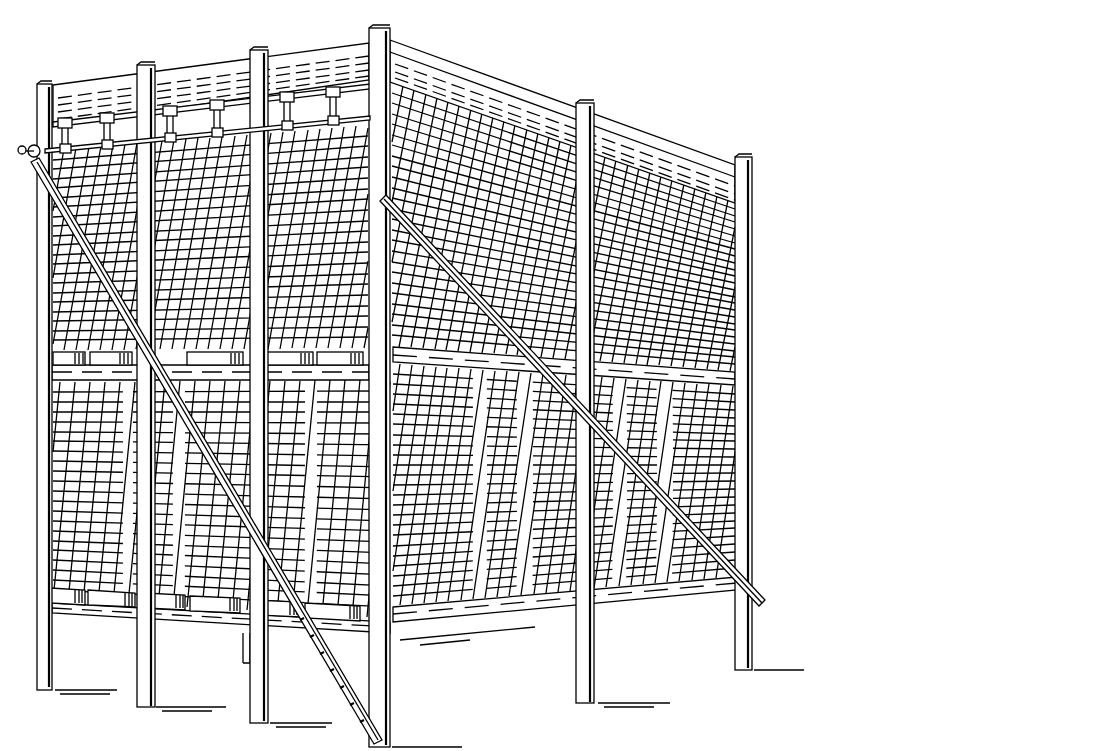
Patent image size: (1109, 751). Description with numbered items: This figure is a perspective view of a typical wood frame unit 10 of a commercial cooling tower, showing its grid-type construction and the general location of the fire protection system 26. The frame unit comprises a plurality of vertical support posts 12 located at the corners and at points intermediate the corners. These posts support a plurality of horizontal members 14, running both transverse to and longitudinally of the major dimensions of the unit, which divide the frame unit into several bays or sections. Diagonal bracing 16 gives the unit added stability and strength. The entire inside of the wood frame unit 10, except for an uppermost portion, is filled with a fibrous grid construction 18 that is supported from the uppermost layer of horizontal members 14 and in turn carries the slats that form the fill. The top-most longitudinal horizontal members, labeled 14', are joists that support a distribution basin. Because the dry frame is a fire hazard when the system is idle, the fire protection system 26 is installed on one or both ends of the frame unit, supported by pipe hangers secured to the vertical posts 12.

The wood frame unit 10 is at (508, 65).
The vertical support posts 12 is at (750, 168).
The horizontal members 14 is at (393, 497).
The joists 14' is at (394, 121).
The diagonal bracing 16 is at (96, 272).
The fibrous grid construction 18 is at (88, 518).
The fire protection system 26 is at (214, 139).